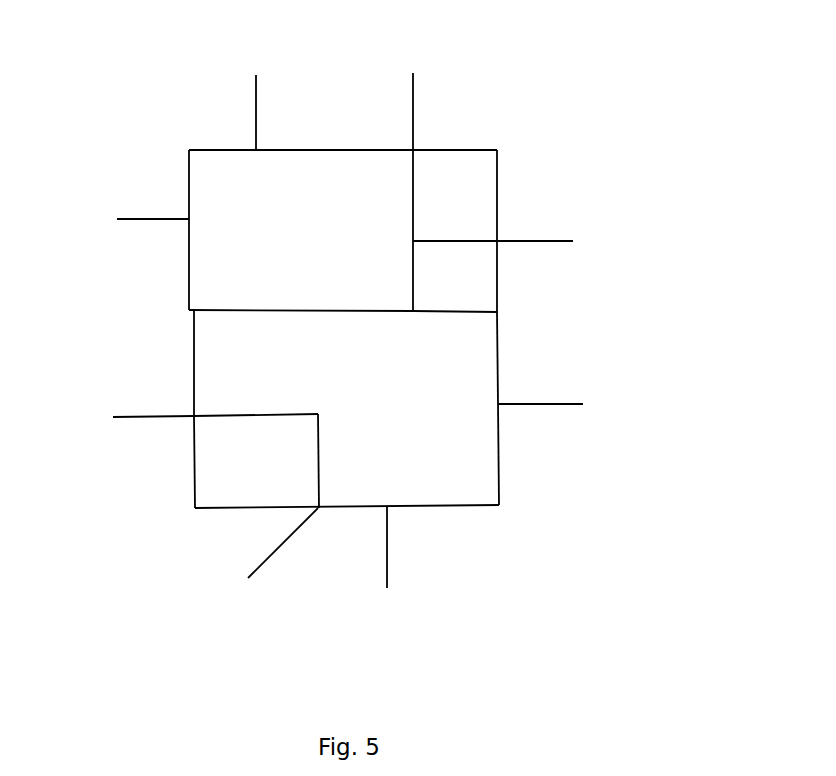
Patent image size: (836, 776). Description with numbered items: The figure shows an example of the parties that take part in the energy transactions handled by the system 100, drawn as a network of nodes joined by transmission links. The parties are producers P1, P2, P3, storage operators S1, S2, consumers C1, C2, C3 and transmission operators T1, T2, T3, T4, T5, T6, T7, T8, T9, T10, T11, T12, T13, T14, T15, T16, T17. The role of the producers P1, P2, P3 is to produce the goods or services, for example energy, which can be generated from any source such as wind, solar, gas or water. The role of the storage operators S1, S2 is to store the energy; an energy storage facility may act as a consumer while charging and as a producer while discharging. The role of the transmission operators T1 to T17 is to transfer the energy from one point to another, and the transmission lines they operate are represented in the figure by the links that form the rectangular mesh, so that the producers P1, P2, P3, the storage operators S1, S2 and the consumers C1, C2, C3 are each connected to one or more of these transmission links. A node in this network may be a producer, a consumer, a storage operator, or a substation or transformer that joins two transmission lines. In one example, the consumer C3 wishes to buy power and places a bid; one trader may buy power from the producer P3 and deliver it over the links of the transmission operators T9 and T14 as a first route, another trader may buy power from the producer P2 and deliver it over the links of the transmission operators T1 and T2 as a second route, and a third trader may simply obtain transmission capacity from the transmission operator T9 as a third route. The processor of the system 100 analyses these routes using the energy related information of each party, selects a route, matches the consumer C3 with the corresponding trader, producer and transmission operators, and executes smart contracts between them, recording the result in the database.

The system 100 is at (572, 82).
The producer P1 is at (238, 81).
The producer P2 is at (423, 96).
The producer P3 is at (111, 432).
The consumer C1 is at (573, 242).
The consumer C2 is at (272, 583).
The consumer C3 is at (113, 234).
The storage operator S1 is at (574, 409).
The storage operator S2 is at (399, 579).
The transmission operator T1 is at (160, 181).
The transmission operator T2 is at (301, 129).
The transmission operator T3 is at (455, 134).
The transmission operator T4 is at (391, 195).
The transmission operator T5 is at (509, 195).
The transmission operator T6 is at (455, 226).
The transmission operator T7 is at (391, 276).
The transmission operator T8 is at (509, 276).
The transmission operator T9 is at (160, 264).
The transmission operator T10 is at (301, 325).
The transmission operator T11 is at (455, 325).
The transmission operator T12 is at (513, 358).
The transmission operator T13 is at (520, 454).
The transmission operator T14 is at (175, 363).
The transmission operator T15 is at (256, 443).
The transmission operator T16 is at (164, 462).
The transmission operator T17 is at (347, 522).